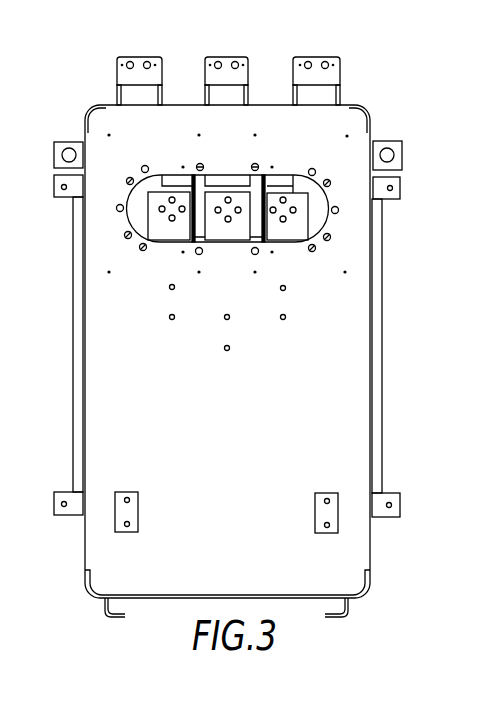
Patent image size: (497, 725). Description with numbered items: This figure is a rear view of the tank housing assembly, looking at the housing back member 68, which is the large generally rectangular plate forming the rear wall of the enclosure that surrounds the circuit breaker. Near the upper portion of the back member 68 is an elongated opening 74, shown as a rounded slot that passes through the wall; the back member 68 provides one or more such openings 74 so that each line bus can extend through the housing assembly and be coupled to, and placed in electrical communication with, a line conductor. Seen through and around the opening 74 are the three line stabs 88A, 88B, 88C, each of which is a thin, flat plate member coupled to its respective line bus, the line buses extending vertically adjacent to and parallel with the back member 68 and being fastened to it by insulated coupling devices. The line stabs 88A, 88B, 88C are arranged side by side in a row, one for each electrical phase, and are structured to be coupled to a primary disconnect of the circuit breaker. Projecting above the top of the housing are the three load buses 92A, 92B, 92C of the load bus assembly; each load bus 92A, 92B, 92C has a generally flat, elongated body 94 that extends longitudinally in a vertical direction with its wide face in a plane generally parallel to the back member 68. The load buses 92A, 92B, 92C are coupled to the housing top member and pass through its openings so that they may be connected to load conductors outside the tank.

The back member 68 is at (95, 355).
The opening 74 is at (138, 210).
The elongated body 94 is at (297, 196).
The line stab 88A is at (283, 242).
The line stab 88B is at (227, 242).
The line stab 88C is at (158, 243).
The load bus 92A is at (318, 62).
The load bus 92B is at (232, 62).
The load bus 92C is at (140, 62).